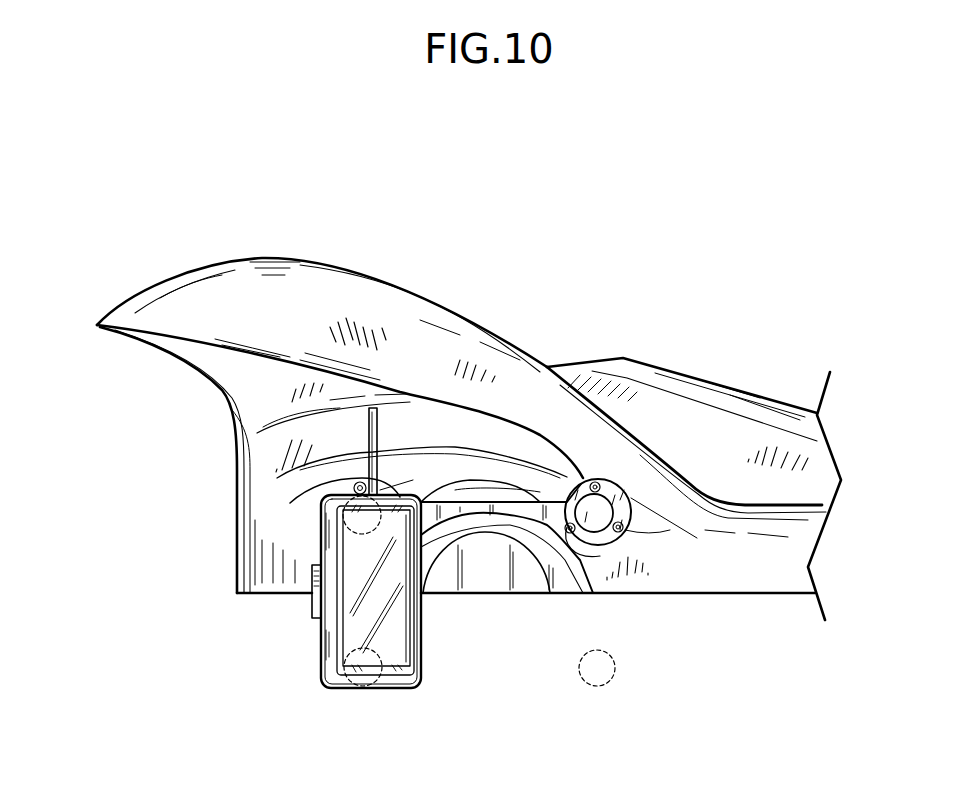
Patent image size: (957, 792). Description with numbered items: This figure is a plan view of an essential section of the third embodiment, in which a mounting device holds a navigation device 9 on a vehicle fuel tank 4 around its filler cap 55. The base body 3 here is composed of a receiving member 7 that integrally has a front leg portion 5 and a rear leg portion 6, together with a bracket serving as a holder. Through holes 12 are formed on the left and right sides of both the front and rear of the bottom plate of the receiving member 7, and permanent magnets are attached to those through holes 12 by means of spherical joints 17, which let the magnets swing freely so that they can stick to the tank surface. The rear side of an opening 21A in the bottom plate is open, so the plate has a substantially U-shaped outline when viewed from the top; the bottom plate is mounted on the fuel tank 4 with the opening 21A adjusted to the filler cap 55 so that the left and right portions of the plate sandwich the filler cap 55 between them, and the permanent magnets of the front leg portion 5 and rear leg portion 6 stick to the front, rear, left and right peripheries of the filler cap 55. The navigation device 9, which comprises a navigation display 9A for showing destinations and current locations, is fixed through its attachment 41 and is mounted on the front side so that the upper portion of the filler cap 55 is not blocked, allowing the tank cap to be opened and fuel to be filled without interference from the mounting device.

The base body 3 is at (478, 502).
The fuel tank 4 is at (338, 293).
The front leg portion 5 is at (344, 483).
The rear leg portion 6 is at (626, 491).
The receiving member 7 is at (448, 502).
The navigation device 9 is at (321, 652).
The navigation display 9A is at (357, 633).
The through hole 12 is at (612, 495).
The spherical joint 17 is at (586, 482).
The opening 21A is at (505, 520).
The attachment 41 is at (313, 608).
The filler cap 55 is at (490, 570).